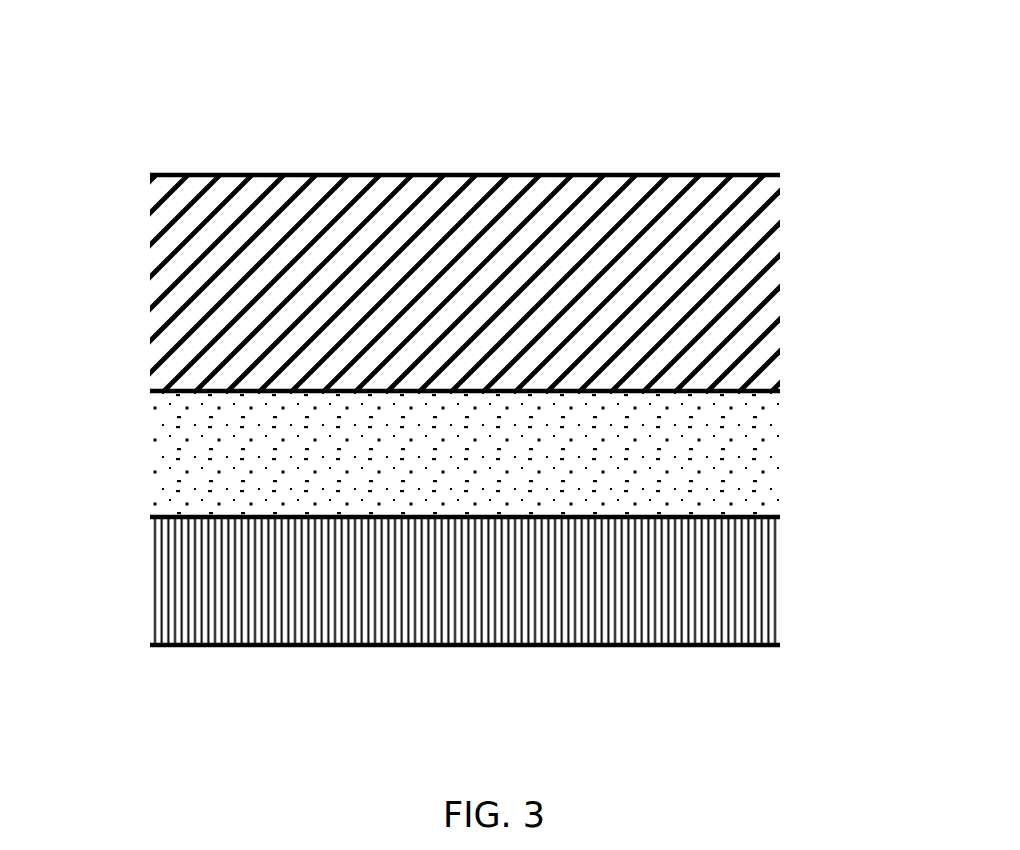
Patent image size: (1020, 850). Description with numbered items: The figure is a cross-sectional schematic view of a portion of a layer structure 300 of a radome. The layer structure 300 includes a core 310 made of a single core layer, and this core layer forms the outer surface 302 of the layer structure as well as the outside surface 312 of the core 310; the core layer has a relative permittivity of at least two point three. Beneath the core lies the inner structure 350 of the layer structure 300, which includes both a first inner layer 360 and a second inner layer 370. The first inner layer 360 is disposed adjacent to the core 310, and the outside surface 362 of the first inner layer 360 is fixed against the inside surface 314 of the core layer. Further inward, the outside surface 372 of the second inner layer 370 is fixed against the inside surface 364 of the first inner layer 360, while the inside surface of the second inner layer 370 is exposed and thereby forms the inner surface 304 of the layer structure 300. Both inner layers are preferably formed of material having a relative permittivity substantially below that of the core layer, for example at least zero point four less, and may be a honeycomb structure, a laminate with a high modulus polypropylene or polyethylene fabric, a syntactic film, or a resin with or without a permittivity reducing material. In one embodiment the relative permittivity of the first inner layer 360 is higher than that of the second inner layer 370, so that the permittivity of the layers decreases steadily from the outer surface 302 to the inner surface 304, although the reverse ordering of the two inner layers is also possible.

The layer structure 300 is at (753, 89).
The outer surface 302 is at (364, 126).
The inner surface 304 is at (415, 694).
The core 310 is at (790, 175).
The outside surface of the core 312 is at (465, 161).
The inside surface of the core layer 314 is at (210, 412).
The inner structure 350 is at (790, 391).
The first inner layer 360 is at (225, 458).
The outside surface of the first inner layer 362 is at (203, 375).
The inside surface of the first inner layer 364 is at (204, 542).
The second inner layer 370 is at (223, 610).
The outside surface of the second inner layer 372 is at (213, 503).